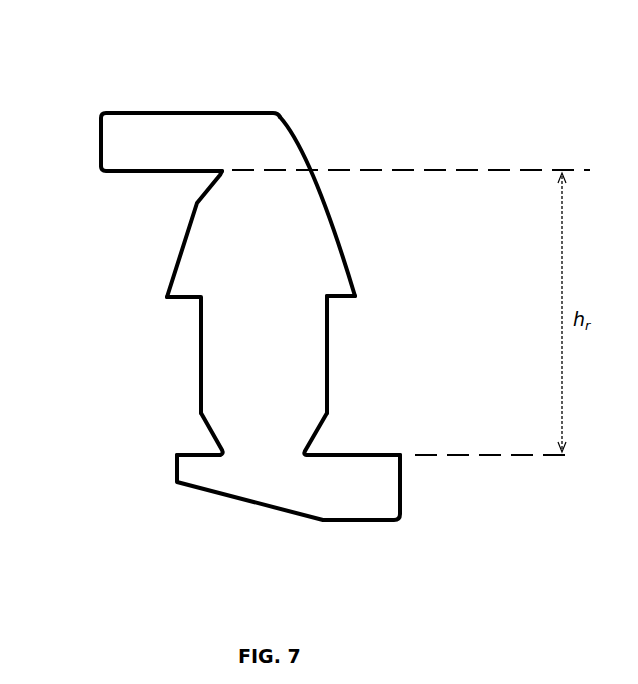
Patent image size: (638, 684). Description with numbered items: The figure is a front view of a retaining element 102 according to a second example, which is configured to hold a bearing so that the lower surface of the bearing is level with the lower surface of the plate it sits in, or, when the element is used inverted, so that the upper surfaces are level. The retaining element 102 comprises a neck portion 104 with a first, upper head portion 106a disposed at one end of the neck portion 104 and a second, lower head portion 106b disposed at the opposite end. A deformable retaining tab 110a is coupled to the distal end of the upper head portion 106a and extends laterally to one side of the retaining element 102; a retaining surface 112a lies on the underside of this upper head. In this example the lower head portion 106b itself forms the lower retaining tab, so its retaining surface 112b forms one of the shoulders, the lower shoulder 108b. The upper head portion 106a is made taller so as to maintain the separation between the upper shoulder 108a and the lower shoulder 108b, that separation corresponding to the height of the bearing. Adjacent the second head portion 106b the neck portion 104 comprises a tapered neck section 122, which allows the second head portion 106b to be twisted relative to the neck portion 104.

The retaining element 102 is at (270, 269).
The neck portion 104 is at (240, 326).
The first head portion 106a is at (298, 220).
The second head portion 106b is at (255, 472).
The upper shoulder 108a is at (332, 277).
The lower shoulder 108b is at (321, 470).
The deformable retaining tab 110a is at (133, 133).
The retaining surface 112a is at (130, 177).
The retaining surface 112b is at (375, 452).
The tapered neck section 122 is at (218, 448).